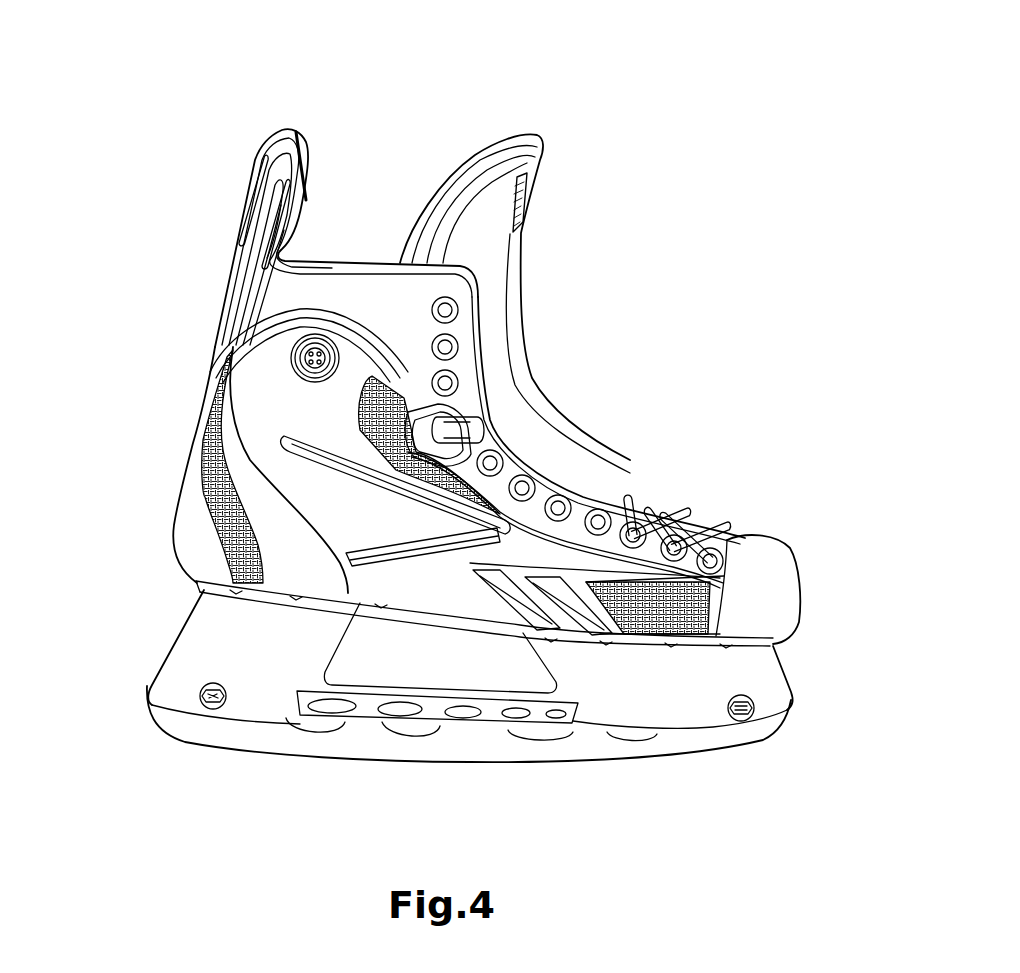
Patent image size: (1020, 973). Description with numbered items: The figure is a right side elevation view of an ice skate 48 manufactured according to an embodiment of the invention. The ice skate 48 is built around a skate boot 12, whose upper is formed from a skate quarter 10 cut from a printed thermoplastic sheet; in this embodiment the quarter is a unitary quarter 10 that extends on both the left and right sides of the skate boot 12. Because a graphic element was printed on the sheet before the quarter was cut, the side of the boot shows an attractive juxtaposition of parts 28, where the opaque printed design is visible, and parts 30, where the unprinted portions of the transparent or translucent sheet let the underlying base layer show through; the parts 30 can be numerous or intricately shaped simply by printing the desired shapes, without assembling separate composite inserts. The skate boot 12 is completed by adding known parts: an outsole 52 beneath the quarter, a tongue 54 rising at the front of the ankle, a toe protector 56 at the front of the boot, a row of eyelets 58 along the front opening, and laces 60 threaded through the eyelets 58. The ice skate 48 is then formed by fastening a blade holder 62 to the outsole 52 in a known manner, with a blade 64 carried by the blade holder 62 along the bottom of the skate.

The skate quarter 10 is at (180, 362).
The skate boot 12 is at (173, 207).
The parts covered by the graphic element 28 is at (276, 521).
The parts not covered by the graphic element 30 is at (378, 405).
The ice skate 48 is at (668, 102).
The outsole 52 is at (472, 618).
The tongue 54 is at (534, 196).
The toe protector 56 is at (762, 554).
The eyelets 58 is at (708, 558).
The laces 60 is at (662, 512).
The blade holder 62 is at (258, 712).
The blade 64 is at (356, 742).